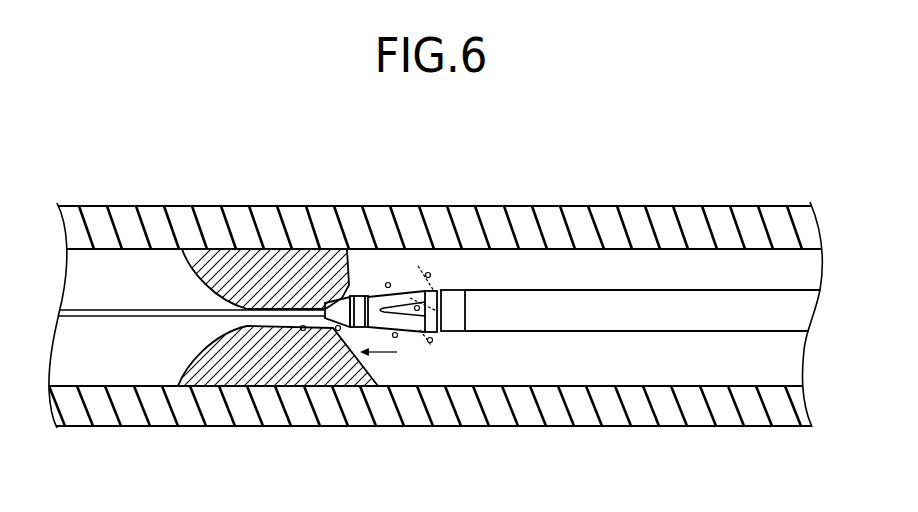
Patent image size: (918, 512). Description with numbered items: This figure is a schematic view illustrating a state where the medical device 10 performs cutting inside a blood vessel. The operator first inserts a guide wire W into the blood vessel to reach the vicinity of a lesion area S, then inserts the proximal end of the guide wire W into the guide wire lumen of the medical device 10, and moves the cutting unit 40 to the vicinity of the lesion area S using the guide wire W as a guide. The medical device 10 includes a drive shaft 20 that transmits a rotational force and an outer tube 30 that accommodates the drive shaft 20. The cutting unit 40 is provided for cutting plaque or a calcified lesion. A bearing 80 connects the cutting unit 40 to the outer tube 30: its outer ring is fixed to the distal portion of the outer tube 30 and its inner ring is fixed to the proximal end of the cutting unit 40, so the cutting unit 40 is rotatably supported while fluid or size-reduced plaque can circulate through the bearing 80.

The medical device 10 is at (492, 262).
The drive shaft 20 is at (540, 303).
The outer tube 30 is at (655, 302).
The cutting unit 40 is at (343, 300).
The bearing 80 is at (453, 322).
The lesion area S is at (243, 258).
The guide wire W is at (140, 318).